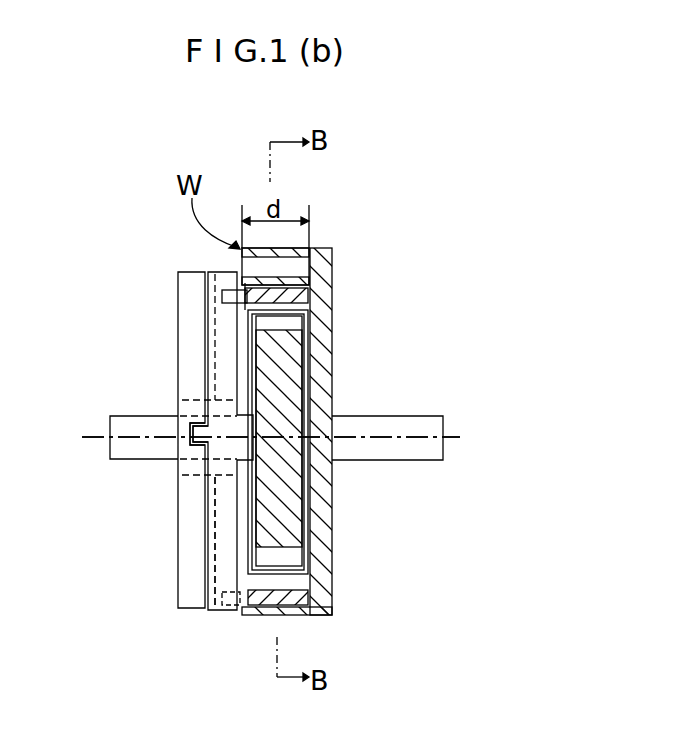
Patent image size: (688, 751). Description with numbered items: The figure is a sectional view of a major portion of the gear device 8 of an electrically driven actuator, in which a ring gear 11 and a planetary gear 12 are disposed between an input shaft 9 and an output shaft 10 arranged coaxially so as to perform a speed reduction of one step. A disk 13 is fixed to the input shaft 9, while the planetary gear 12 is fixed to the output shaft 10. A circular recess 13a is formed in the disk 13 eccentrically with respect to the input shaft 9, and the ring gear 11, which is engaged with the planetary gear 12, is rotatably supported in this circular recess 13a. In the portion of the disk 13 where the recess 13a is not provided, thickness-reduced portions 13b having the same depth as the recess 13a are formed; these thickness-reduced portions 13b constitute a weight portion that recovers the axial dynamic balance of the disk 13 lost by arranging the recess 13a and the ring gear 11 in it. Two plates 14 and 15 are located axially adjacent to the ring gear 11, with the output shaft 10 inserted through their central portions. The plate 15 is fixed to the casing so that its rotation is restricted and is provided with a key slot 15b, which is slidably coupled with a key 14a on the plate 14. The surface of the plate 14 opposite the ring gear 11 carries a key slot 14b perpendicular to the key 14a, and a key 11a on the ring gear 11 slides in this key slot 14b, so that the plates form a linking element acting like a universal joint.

The gear device 8 is at (391, 204).
The input shaft 9 is at (408, 425).
The output shaft 10 is at (132, 425).
The ring gear 11 is at (295, 580).
The key 11a is at (232, 607).
The planetary gear 12 is at (283, 505).
The disk 13 is at (320, 615).
The circular recess 13a is at (313, 339).
The thickness-reduced portions 13b is at (257, 268).
The plate 14 is at (214, 612).
The key 14a is at (202, 428).
The key slot 14b is at (215, 548).
The plate 15 is at (190, 610).
The key slot 15b is at (195, 452).